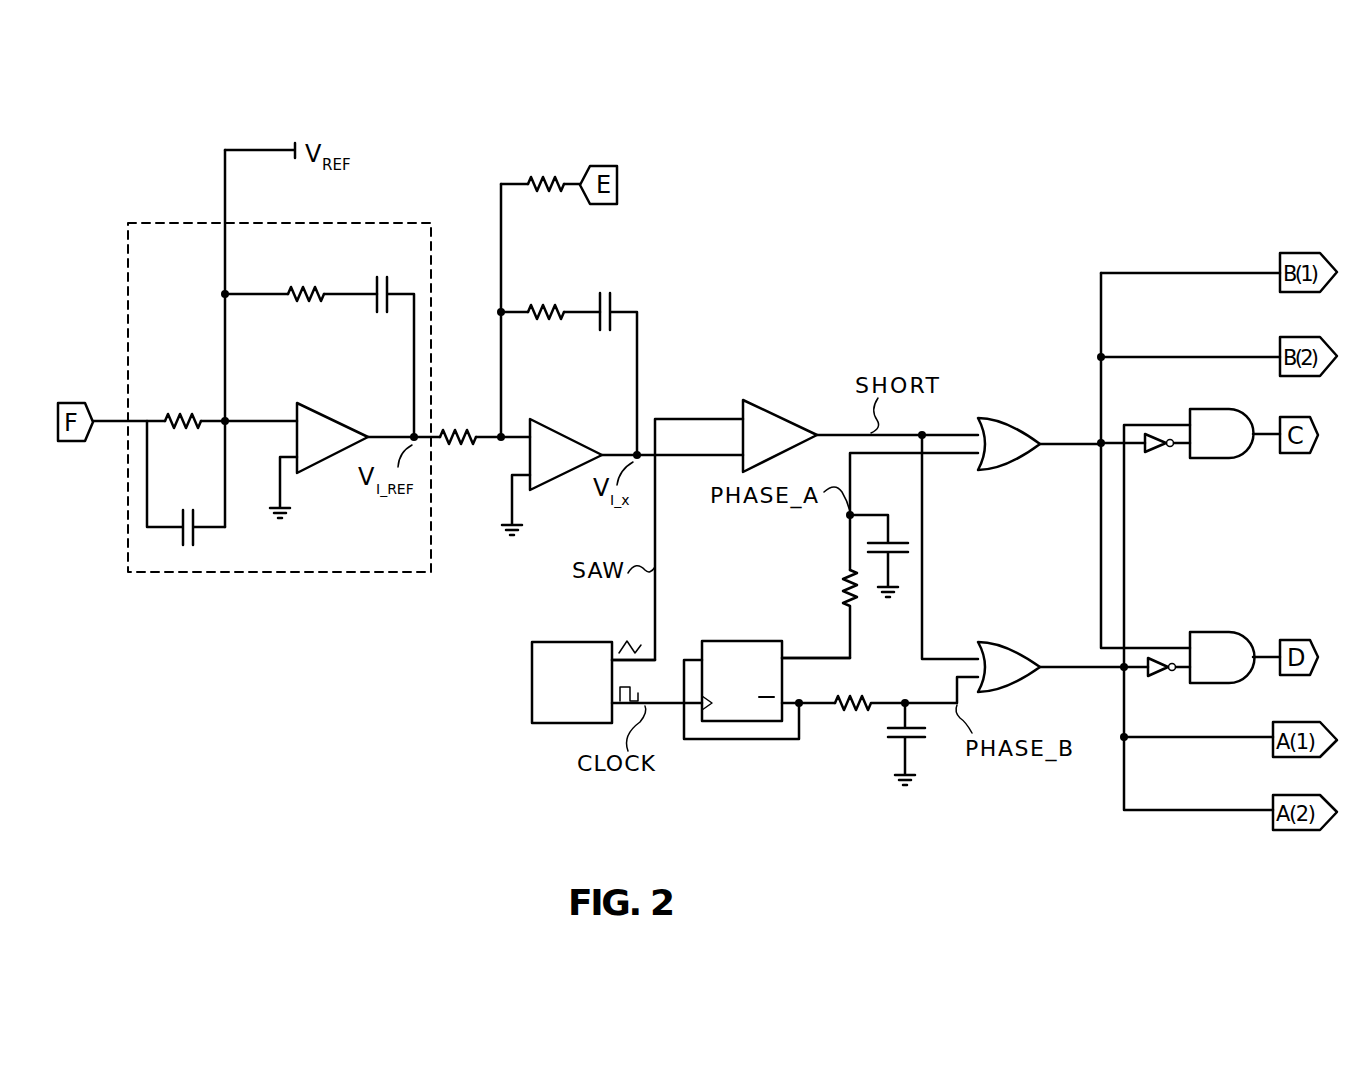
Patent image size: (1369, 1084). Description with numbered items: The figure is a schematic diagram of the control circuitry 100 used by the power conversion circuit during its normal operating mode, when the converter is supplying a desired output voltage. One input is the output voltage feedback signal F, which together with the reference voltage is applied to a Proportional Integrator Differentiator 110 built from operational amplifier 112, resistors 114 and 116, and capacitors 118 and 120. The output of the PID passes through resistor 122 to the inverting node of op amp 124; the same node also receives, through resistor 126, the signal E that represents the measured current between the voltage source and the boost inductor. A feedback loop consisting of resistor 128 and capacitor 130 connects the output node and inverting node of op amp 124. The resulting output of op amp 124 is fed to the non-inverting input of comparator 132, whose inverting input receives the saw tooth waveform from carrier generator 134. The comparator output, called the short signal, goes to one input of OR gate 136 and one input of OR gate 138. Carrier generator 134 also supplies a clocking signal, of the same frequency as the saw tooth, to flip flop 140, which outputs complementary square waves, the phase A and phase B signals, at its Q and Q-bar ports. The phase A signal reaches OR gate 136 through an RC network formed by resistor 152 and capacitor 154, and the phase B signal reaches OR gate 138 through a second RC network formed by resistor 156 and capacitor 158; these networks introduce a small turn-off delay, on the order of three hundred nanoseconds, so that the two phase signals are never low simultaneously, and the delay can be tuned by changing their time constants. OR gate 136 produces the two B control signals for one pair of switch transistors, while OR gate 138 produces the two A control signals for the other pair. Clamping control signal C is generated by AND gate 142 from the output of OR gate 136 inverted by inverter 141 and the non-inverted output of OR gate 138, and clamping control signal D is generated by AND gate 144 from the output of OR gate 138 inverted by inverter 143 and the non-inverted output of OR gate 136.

The control circuitry 100 is at (853, 231).
The Proportional Integrator Differentiator (PID) 110 is at (173, 252).
The operational amplifier 112 is at (319, 460).
The resistor 114 is at (301, 279).
The resistor 116 is at (183, 405).
The capacitor 118 is at (186, 483).
The capacitor 120 is at (388, 357).
The resistor 122 is at (458, 453).
The operational amplifier 124 is at (552, 477).
The resistor 126 is at (540, 170).
The resistor 128 is at (550, 298).
The capacitor 130 is at (612, 374).
The comparator 132 is at (780, 436).
The carrier generator 134 is at (617, 682).
The OR gate 136 is at (1009, 444).
The OR gate 138 is at (1009, 667).
The flip flop 140 is at (735, 641).
The inverter 141 is at (1145, 458).
The AND gate 142 is at (1235, 433).
The inverter 143 is at (1166, 680).
The AND gate 144 is at (1235, 657).
The resistor 152 is at (819, 614).
The capacitor 154 is at (896, 540).
The resistor 156 is at (906, 691).
The capacitor 158 is at (888, 733).